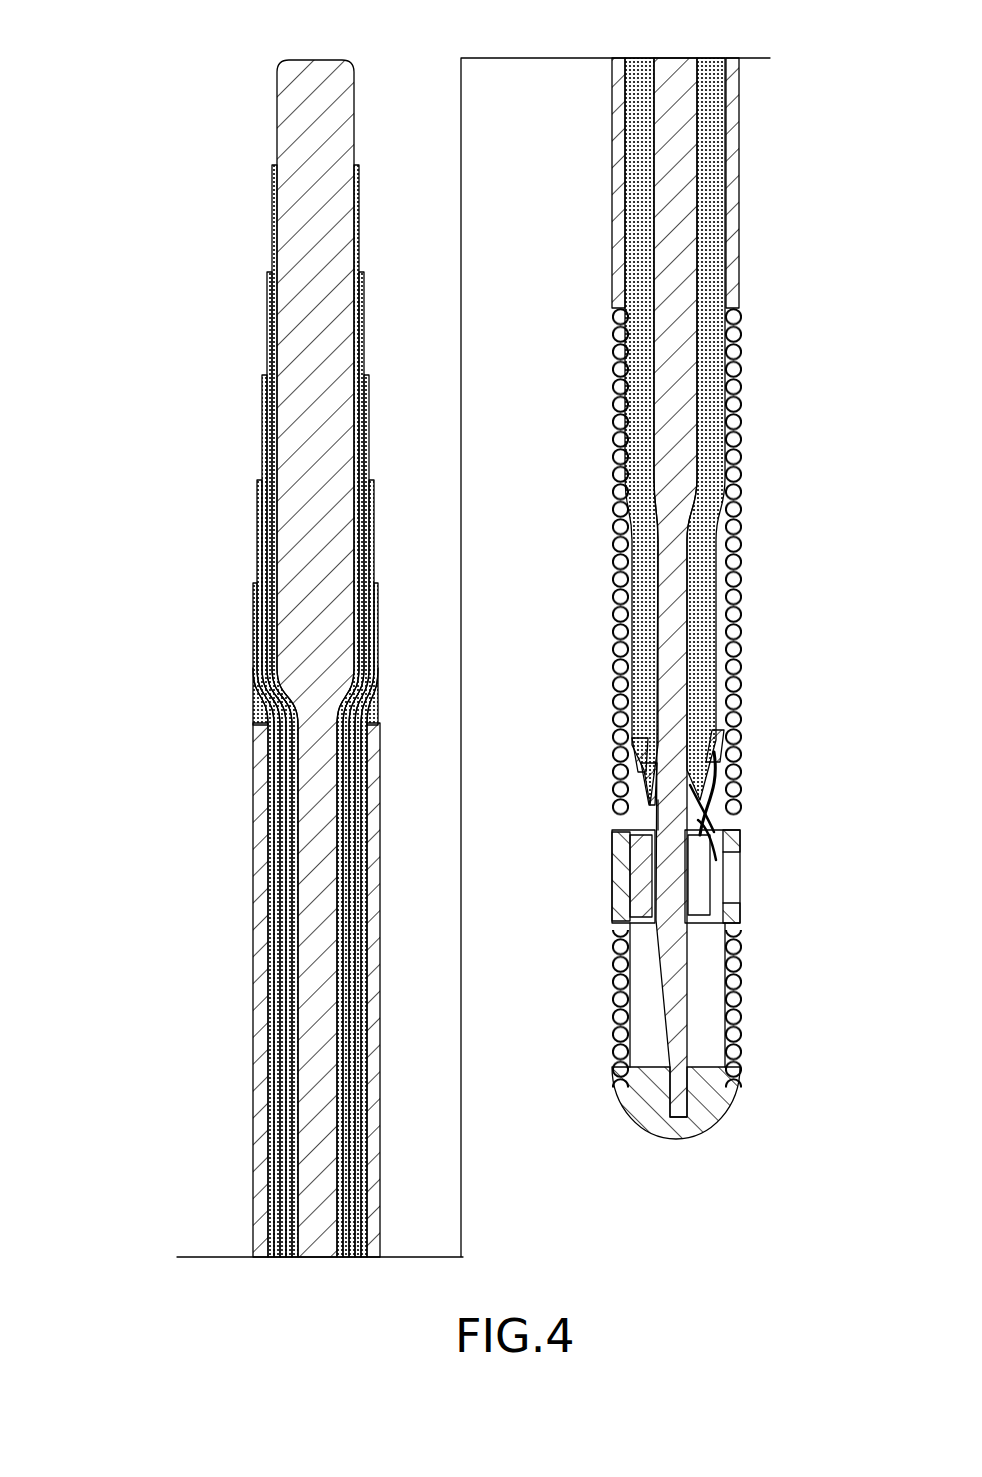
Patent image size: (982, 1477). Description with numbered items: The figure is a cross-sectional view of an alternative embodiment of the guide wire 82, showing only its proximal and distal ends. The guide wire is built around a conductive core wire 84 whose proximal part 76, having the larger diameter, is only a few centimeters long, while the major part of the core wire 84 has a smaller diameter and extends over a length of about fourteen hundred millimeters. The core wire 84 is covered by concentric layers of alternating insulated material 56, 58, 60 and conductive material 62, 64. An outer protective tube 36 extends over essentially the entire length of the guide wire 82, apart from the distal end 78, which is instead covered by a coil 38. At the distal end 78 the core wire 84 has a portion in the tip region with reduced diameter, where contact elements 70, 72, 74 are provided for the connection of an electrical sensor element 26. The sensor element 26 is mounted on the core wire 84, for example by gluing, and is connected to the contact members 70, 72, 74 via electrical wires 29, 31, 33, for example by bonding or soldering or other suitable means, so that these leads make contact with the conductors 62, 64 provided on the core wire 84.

The sensor element 26 is at (712, 888).
The electrical wire 29 is at (710, 800).
The electrical wire 31 is at (715, 767).
The electrical wire 33 is at (735, 738).
The outer protective tube 36 is at (255, 830).
The coil 38 is at (742, 668).
The insulated material layer 56 is at (273, 212).
The insulated material layer 58 is at (263, 421).
The insulated material layer 60 is at (255, 620).
The conductive material layer 62 is at (268, 318).
The conductive material layer 64 is at (258, 518).
The contact element 70 is at (638, 817).
The contact element 72 is at (640, 765).
The contact element 74 is at (632, 740).
The proximal part 76 is at (163, 203).
The distal end 78 is at (783, 564).
The guide wire 82 is at (226, 1064).
The core wire 84 is at (313, 58).